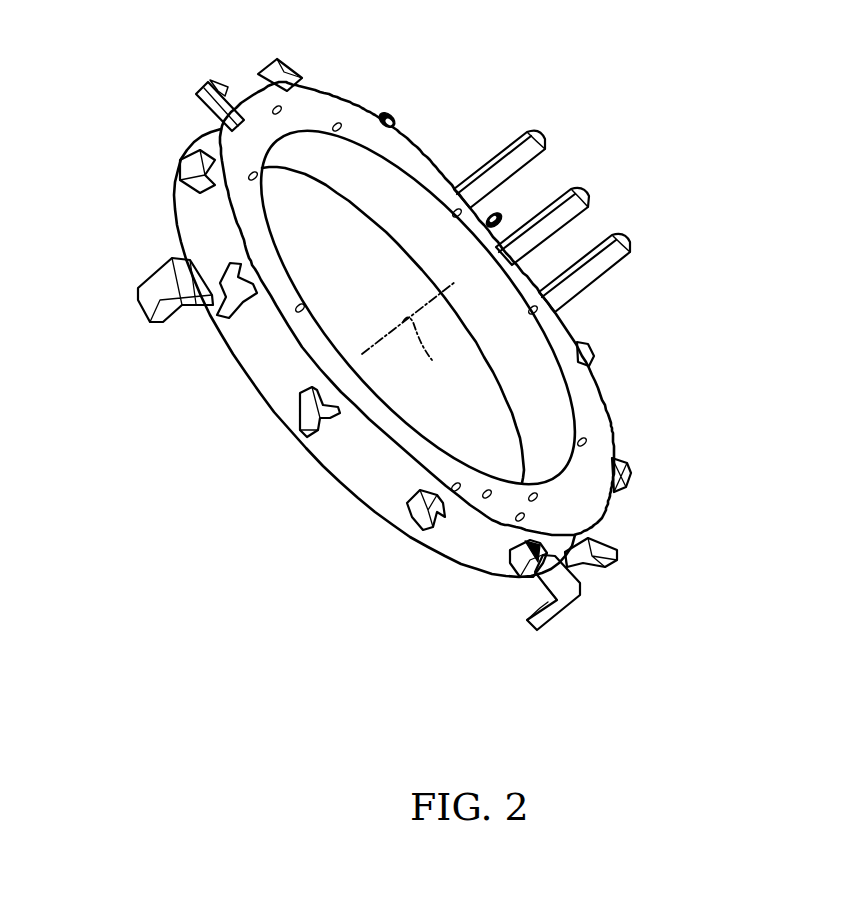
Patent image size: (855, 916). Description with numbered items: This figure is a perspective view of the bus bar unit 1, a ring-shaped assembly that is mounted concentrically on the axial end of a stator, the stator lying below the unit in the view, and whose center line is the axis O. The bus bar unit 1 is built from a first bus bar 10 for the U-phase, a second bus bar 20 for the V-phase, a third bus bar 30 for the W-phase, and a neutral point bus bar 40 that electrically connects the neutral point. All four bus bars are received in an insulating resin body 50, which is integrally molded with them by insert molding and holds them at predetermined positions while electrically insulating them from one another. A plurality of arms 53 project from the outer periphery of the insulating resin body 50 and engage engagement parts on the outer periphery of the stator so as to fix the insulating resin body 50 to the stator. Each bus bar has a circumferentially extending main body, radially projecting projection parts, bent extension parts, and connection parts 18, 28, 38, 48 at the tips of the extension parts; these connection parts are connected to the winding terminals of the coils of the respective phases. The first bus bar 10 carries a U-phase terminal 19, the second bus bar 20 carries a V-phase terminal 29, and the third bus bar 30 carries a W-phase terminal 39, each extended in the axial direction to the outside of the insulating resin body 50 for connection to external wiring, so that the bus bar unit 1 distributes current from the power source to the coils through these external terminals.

The bus bar unit 1 is at (188, 127).
The first bus bar 10 is at (446, 528).
The connection part 18 is at (500, 215).
The U-phase terminal 19 is at (625, 252).
The second bus bar 20 is at (185, 190).
The connection part 28 is at (183, 173).
The V-phase terminal 29 is at (578, 208).
The third bus bar 30 is at (518, 578).
The connection part 38 is at (390, 116).
The W-phase terminal 39 is at (538, 145).
The neutral point bus bar 40 is at (222, 305).
The connection part 48 is at (272, 62).
The insulating resin body 50 is at (598, 423).
The arm 53 is at (158, 305).